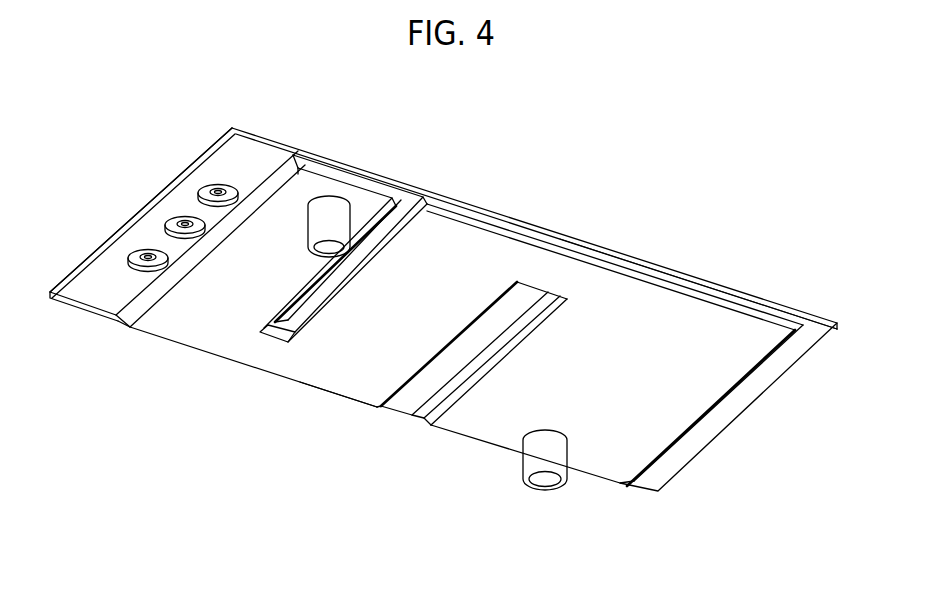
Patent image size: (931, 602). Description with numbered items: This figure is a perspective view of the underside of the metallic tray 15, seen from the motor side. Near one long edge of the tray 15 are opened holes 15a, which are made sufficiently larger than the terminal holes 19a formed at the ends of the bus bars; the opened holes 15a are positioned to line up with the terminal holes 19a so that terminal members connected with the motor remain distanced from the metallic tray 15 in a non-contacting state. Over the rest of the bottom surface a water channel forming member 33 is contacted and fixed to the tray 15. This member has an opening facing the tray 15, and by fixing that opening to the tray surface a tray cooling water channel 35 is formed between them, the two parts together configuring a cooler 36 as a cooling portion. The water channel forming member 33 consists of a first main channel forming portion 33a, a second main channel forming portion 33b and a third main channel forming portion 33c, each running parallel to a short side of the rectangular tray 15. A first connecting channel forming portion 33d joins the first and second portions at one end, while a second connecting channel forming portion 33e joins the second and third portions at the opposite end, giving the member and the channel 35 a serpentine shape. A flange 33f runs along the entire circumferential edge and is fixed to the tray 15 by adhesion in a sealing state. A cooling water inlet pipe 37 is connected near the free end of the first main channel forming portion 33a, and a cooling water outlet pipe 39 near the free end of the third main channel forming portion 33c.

The tray 15 is at (256, 147).
The opened holes 15a is at (220, 206).
The terminal holes 19a is at (147, 254).
The water channel forming member 33 is at (689, 323).
The first main channel forming portion 33a is at (230, 285).
The second main channel forming portion 33b is at (370, 335).
The third main channel forming portion 33c is at (620, 413).
The first connecting channel forming portion 33d is at (270, 355).
The second connecting channel forming portion 33e is at (550, 275).
The flange 33f is at (491, 225).
The tray cooling water channel 35 is at (633, 303).
The cooler 36 is at (478, 434).
The cooling water inlet pipe 37 is at (330, 210).
The cooling water outlet pipe 39 is at (533, 490).